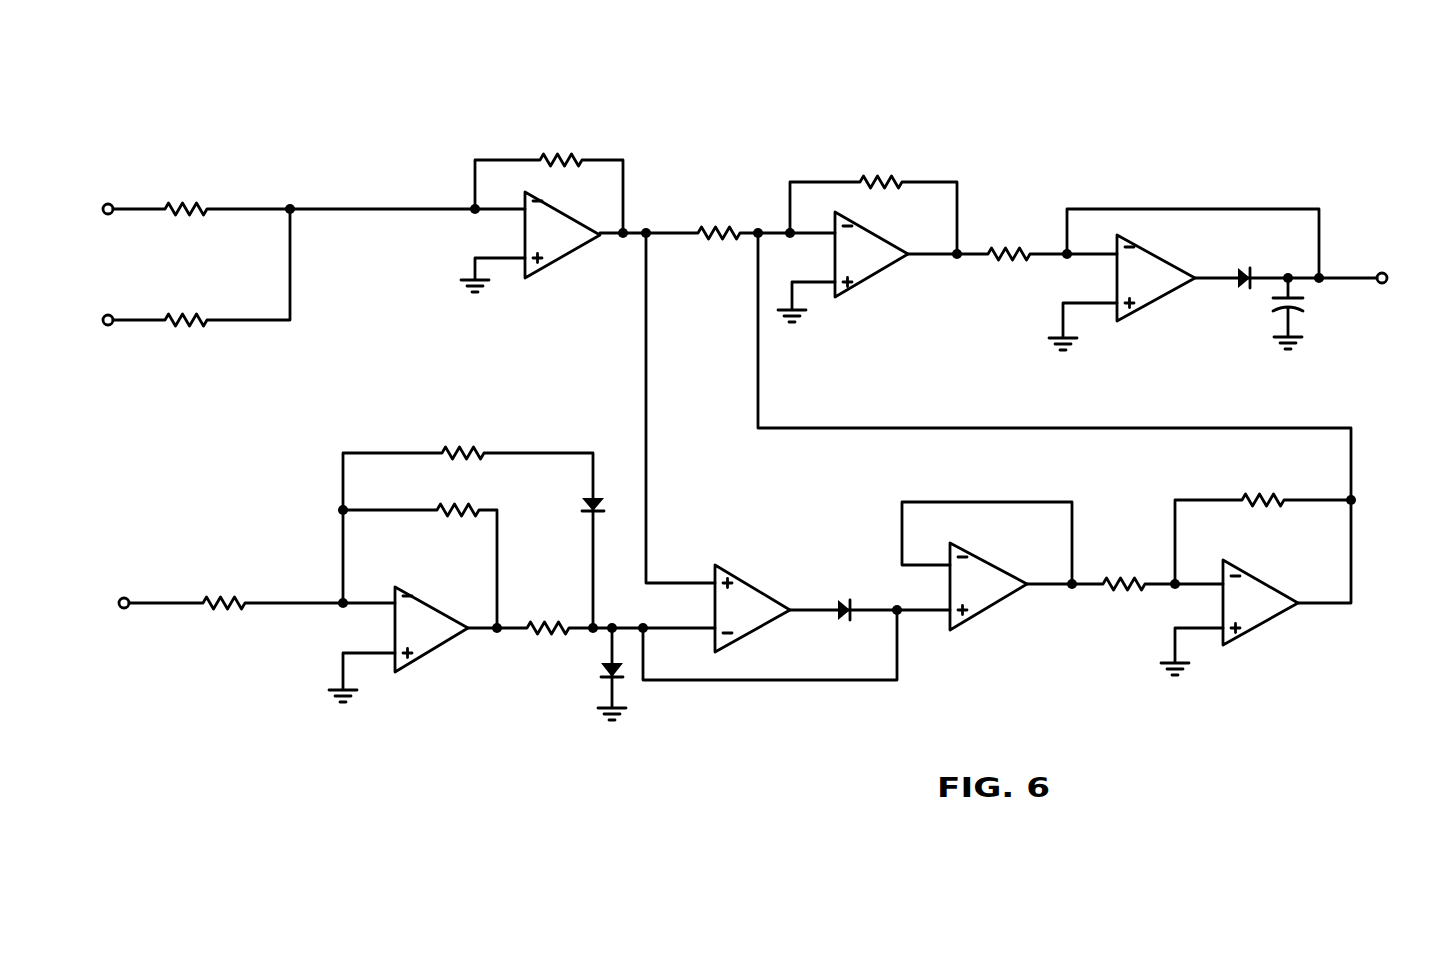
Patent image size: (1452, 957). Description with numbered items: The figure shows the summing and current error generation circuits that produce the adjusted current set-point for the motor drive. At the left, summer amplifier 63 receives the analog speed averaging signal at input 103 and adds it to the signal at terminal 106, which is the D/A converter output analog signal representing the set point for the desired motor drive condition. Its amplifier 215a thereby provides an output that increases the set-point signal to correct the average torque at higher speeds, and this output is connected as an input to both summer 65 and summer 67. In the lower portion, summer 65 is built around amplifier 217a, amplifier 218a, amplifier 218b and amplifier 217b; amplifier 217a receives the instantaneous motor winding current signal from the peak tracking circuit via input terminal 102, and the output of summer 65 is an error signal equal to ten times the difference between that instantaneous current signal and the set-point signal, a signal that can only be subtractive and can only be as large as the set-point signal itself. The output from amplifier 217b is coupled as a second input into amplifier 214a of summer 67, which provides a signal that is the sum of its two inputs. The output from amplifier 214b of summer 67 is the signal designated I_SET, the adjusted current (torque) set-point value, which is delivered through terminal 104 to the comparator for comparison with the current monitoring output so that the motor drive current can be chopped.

The summer amplifier 63 is at (511, 144).
The summer 67 is at (1008, 184).
The summer 65 is at (652, 722).
The input terminal 102 is at (126, 597).
The input 103 is at (109, 204).
The terminal 104 is at (1383, 272).
The terminal 106 is at (108, 326).
The amplifier 215a is at (562, 235).
The amplifier 214a is at (871, 254).
The amplifier 214b is at (1156, 278).
The amplifier 217a is at (431, 629).
The amplifier 217b is at (1260, 602).
The amplifier 218a is at (752, 608).
The amplifier 218b is at (988, 586).